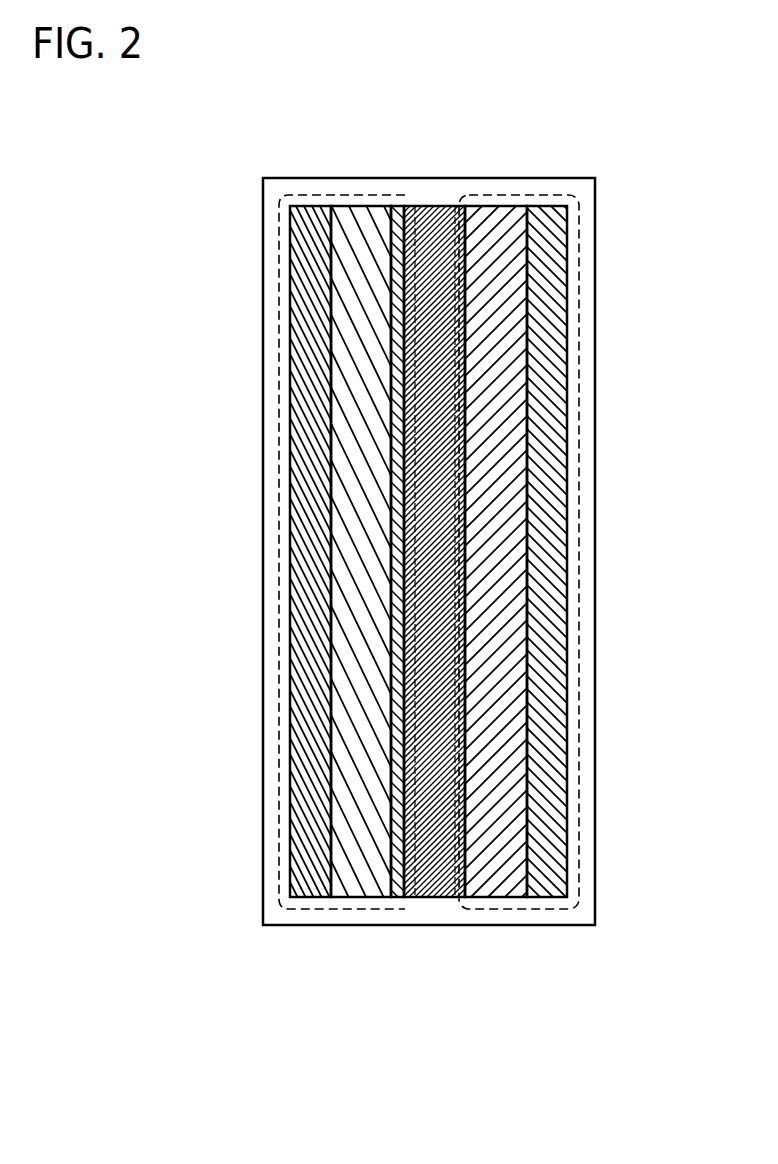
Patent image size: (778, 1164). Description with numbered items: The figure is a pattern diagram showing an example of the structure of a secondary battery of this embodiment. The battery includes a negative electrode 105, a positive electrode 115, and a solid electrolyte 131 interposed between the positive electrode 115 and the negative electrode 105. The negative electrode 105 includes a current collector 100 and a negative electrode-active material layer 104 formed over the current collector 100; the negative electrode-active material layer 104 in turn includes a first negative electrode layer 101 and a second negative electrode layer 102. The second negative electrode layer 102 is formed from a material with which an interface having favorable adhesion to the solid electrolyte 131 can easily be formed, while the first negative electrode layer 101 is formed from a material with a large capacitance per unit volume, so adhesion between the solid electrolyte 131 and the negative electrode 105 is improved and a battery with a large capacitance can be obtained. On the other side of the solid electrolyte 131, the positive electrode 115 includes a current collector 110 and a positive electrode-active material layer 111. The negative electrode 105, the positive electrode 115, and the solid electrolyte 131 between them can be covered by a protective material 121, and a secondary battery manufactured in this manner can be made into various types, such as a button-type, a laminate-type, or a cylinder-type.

The current collector 100 is at (303, 885).
The first negative electrode layer 101 is at (358, 887).
The second negative electrode layer 102 is at (398, 887).
The negative electrode-active material layer 104 is at (404, 206).
The negative electrode 105 is at (280, 742).
The current collector 110 is at (553, 880).
The positive electrode-active material layer 111 is at (498, 880).
The positive electrode 115 is at (580, 755).
The protective material 121 is at (596, 588).
The solid electrolyte 131 is at (432, 205).